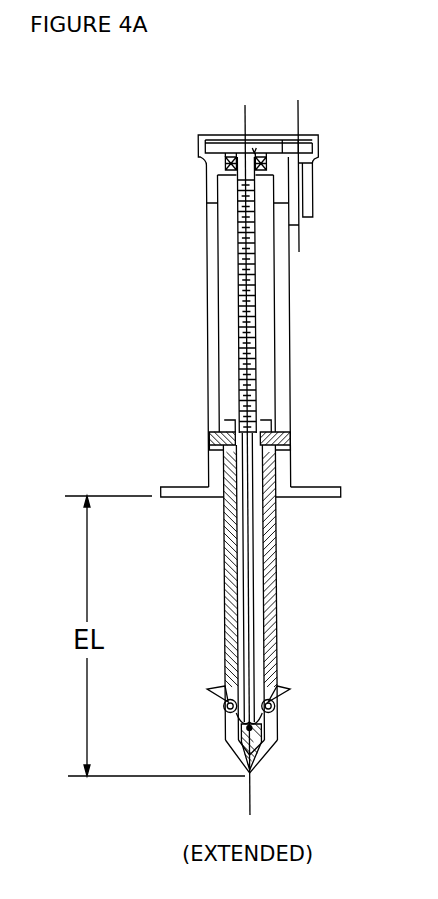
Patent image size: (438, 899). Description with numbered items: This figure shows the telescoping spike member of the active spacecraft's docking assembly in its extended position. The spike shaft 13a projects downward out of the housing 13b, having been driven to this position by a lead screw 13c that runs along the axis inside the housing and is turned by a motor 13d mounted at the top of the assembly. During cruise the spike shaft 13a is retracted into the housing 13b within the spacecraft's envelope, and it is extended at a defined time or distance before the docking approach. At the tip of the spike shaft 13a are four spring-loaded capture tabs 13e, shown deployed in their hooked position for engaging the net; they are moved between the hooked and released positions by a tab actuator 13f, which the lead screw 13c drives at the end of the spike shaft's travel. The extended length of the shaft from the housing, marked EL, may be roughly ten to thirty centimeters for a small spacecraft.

The spike shaft 13a is at (281, 548).
The housing 13b is at (290, 368).
The lead screw 13c is at (260, 283).
The motor 13d is at (314, 185).
The spring-loaded capture tabs 13e is at (294, 693).
The tab actuator 13f is at (263, 632).